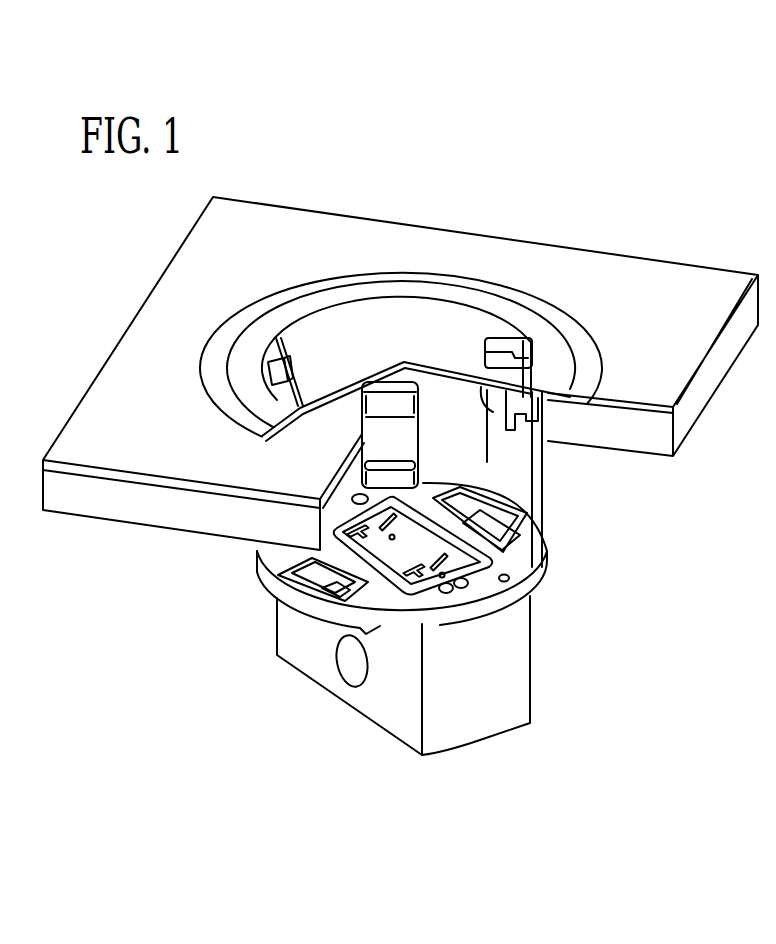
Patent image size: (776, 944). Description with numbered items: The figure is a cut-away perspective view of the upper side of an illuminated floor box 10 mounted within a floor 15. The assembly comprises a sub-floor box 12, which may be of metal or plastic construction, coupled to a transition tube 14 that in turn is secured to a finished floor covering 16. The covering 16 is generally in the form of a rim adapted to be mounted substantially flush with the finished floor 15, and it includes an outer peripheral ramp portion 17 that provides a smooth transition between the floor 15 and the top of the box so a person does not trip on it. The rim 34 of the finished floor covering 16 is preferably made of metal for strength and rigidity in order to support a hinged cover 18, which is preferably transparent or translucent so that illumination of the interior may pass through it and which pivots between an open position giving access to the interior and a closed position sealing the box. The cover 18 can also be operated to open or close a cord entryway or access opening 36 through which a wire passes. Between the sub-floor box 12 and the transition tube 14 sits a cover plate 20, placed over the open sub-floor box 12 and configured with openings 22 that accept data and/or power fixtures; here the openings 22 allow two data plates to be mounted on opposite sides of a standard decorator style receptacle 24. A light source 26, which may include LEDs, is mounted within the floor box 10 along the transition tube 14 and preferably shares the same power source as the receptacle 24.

The illuminated floor box 10 is at (418, 188).
The sub-floor box 12 is at (480, 705).
The transition tube 14 is at (620, 463).
The floor 15 is at (167, 362).
The finished floor covering 16 is at (603, 330).
The outer peripheral ramp portion 17 is at (547, 307).
The hinged cover 18 is at (387, 343).
The cover plate 20 is at (503, 570).
The openings 22 is at (268, 578).
The receptacle 24 is at (430, 480).
The light source 26 is at (416, 545).
The rim 34 is at (300, 290).
The access opening 36 is at (500, 357).